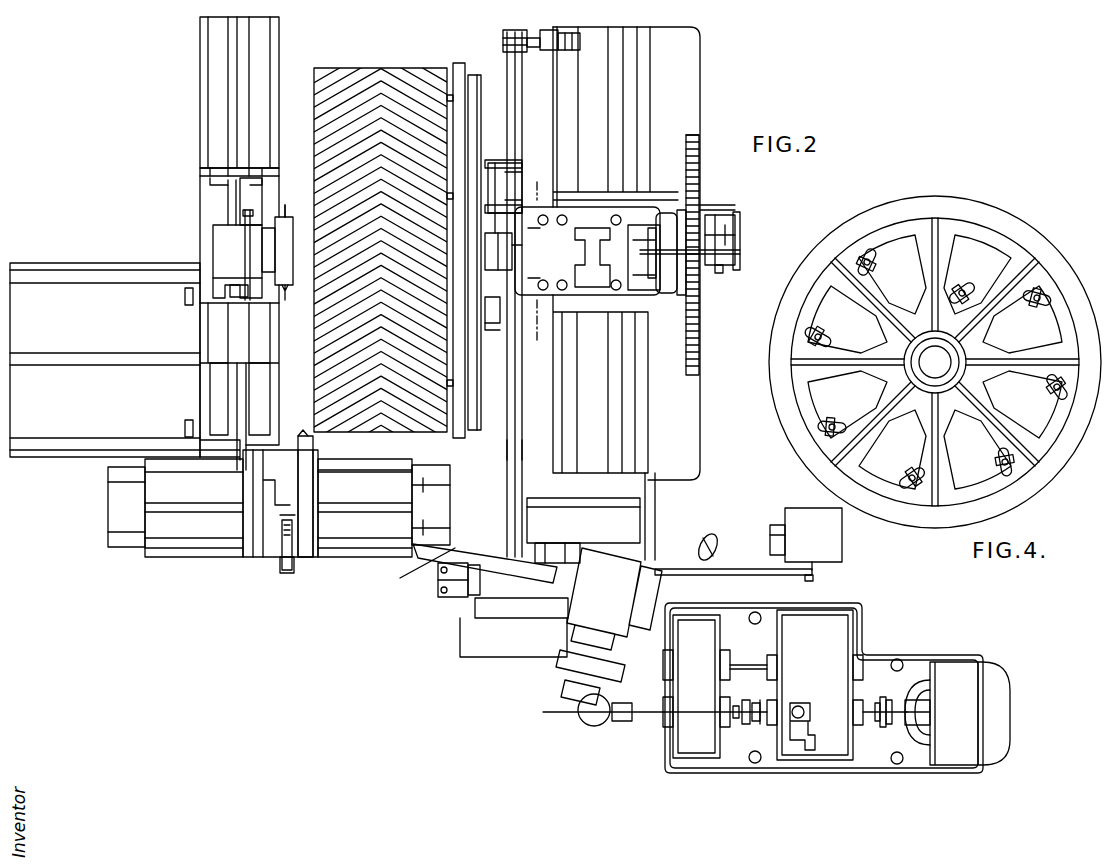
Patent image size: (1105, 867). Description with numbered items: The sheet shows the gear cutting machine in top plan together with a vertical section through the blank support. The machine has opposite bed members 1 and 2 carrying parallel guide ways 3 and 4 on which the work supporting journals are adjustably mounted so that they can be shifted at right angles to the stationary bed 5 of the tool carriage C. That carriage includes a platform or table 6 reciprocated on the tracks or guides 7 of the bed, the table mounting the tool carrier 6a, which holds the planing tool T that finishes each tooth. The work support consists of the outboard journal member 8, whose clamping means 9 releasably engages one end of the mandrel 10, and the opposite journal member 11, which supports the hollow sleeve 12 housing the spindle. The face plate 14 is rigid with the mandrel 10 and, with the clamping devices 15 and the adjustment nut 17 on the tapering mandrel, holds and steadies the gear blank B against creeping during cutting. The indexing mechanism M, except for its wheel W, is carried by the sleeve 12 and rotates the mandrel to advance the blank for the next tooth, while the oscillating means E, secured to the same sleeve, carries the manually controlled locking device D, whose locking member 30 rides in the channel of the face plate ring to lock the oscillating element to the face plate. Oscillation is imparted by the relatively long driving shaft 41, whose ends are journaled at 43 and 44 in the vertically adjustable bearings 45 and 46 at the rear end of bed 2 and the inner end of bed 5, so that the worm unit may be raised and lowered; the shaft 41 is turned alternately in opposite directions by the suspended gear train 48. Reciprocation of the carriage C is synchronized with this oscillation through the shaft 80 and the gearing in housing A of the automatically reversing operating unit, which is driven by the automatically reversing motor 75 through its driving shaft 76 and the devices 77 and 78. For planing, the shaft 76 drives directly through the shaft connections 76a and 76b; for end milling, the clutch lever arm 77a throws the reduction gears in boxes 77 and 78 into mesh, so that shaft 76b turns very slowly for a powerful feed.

In FIG. 2, the bed member 1 is at (125, 361).
In FIG. 2, the bed member 2 is at (684, 438).
In FIG. 2, the guide way 3 is at (226, 133).
In FIG. 2, the guide way 4 is at (620, 100).
In FIG. 2, the stationary bed 5 is at (524, 294).
In FIG. 2, the platform or table 6 is at (365, 508).
In FIG. 2, the tool carrier 6a is at (318, 490).
In FIG. 2, the tracks or guides 7 is at (462, 490).
In FIG. 2, the outboard journal member 8 is at (230, 221).
In FIG. 2, the clamping means 9 is at (242, 250).
In FIG. 2, the mandrel 10 is at (298, 285).
In FIG. 2, the journal member 11 is at (587, 247).
In FIG. 2, the hollow sleeve 12 is at (617, 257).
In FIG. 2, the face plate 14 is at (472, 78).
In FIG. 2, the clamping devices 15 is at (450, 97).
In FIG. 4, the clamping devices 15 is at (835, 345).
In FIG. 2, the adjustment nut 17 is at (290, 207).
In FIG. 2, the locking member 30 is at (512, 250).
In FIG. 2, the driving shaft 41 is at (507, 450).
In FIG. 2, the shaft journal 43 is at (516, 30).
In FIG. 2, the shaft journal 44 is at (485, 575).
In FIG. 2, the vertically adjustable bearing 45 is at (562, 34).
In FIG. 2, the vertically adjustable bearing 46 is at (455, 595).
In FIG. 2, the suspended gear train 48 is at (493, 610).
In FIG. 2, the automatically reversing motor 75 is at (957, 713).
In FIG. 2, the driving shaft 76 is at (876, 705).
In FIG. 2, the shaft connection 76a is at (760, 725).
In FIG. 2, the shaft connection 76b is at (647, 727).
In FIG. 2, the gear box 77 is at (815, 685).
In FIG. 2, the clutch lever arm 77a is at (752, 650).
In FIG. 2, the gear box 78 is at (823, 688).
In FIG. 2, the shaft 80 is at (440, 566).
In FIG. 2, the gearing housing A is at (609, 634).
In FIG. 2, the gear blank B is at (383, 268).
In FIG. 4, the gear blank B is at (980, 212).
In FIG. 2, the tool carriage C is at (175, 508).
In FIG. 2, the manually controlled locking device D is at (502, 172).
In FIG. 2, the oscillating means E is at (492, 323).
In FIG. 2, the indexing mechanism M is at (690, 238).
In FIG. 2, the planing tool T is at (303, 440).
In FIG. 2, the wheel W is at (700, 322).